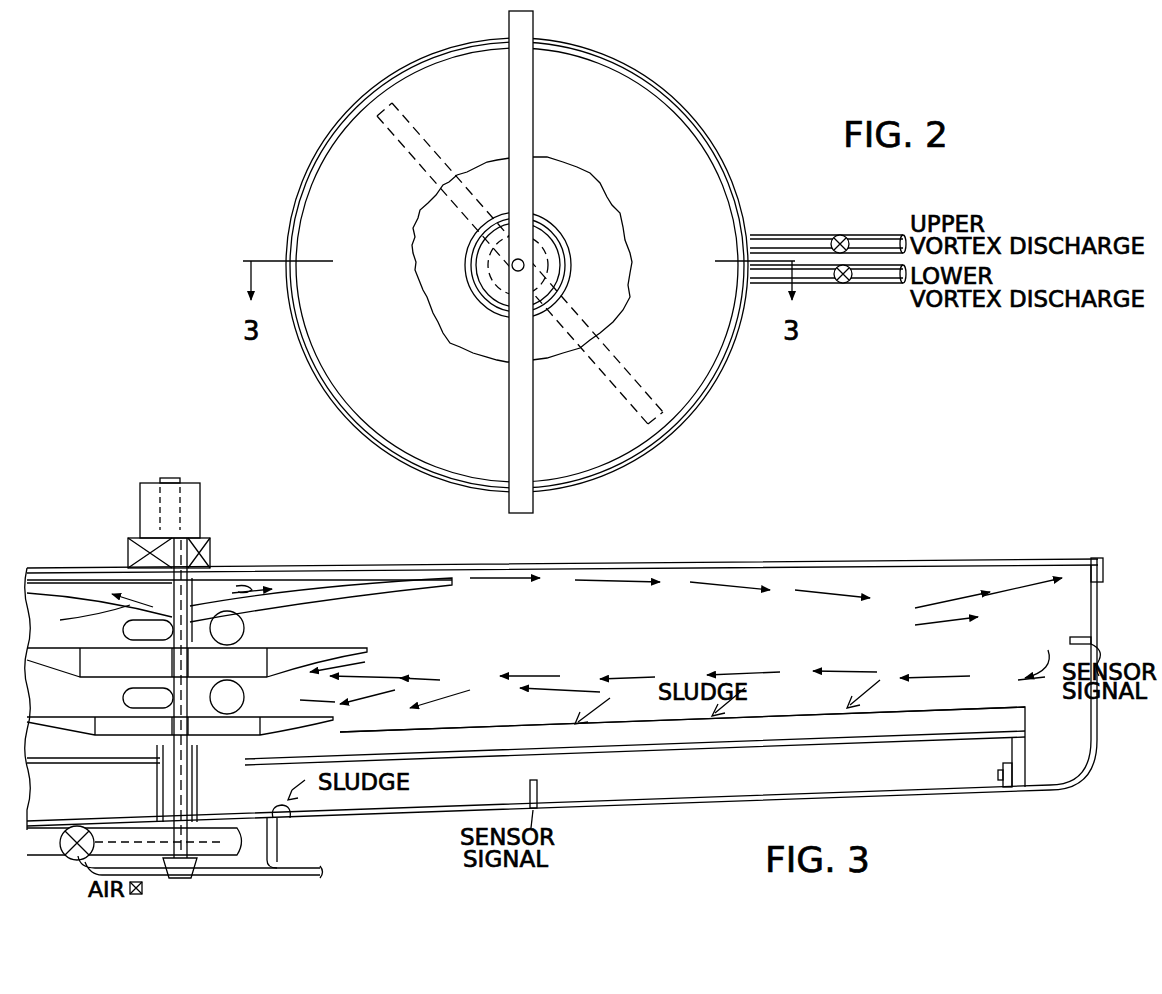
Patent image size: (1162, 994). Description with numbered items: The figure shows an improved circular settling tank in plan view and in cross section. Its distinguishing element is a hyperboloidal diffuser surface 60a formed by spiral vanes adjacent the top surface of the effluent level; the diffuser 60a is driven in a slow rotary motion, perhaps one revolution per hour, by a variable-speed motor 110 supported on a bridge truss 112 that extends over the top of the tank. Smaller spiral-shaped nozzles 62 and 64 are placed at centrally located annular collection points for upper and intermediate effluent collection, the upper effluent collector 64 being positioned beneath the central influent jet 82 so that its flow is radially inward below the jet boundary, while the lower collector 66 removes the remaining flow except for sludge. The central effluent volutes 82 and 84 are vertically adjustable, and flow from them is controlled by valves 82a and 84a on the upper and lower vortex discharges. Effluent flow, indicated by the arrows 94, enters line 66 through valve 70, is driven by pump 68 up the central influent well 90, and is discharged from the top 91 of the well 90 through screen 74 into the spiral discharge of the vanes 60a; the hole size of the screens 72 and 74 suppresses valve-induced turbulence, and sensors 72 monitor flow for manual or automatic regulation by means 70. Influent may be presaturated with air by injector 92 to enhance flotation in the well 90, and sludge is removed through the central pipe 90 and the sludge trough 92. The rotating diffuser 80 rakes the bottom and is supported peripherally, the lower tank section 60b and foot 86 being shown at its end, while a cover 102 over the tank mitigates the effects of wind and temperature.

In FIG. 2, the hyperboloidal diffuser surface 60a is at (597, 218).
In FIG. 3, the hyperboloidal diffuser surface 60a is at (58, 570).
In FIG. 3, the lower tank section / rake end 60b is at (1015, 721).
In FIG. 3, the spiral-shaped nozzle 62 is at (337, 583).
In FIG. 3, the upper effluent collector 64 is at (366, 648).
In FIG. 3, the lower collector 66 is at (335, 715).
In FIG. 3, the pump 68 is at (232, 872).
In FIG. 3, the valve 70 is at (70, 860).
In FIG. 3, the sensor 72 is at (113, 573).
In FIG. 3, the screen 74 is at (228, 610).
In FIG. 2, the rotating diffuser 80 is at (658, 400).
In FIG. 3, the rotating diffuser 80 is at (605, 745).
In FIG. 3, the central influent jet 82 is at (245, 628).
In FIG. 2, the valve 82a is at (862, 218).
In FIG. 3, the central effluent volute 84 is at (245, 697).
In FIG. 2, the valve 84a is at (843, 283).
In FIG. 3, the rake foot 86 is at (1020, 776).
In FIG. 3, the central influent well 90 is at (190, 793).
In FIG. 3, the top of well 91 is at (192, 618).
In FIG. 3, the injector 92 is at (296, 820).
In FIG. 3, the arrows 94 is at (125, 600).
In FIG. 3, the cover 102 is at (690, 563).
In FIG. 3, the motor 110 is at (200, 492).
In FIG. 3, the bridge truss 112 is at (210, 548).